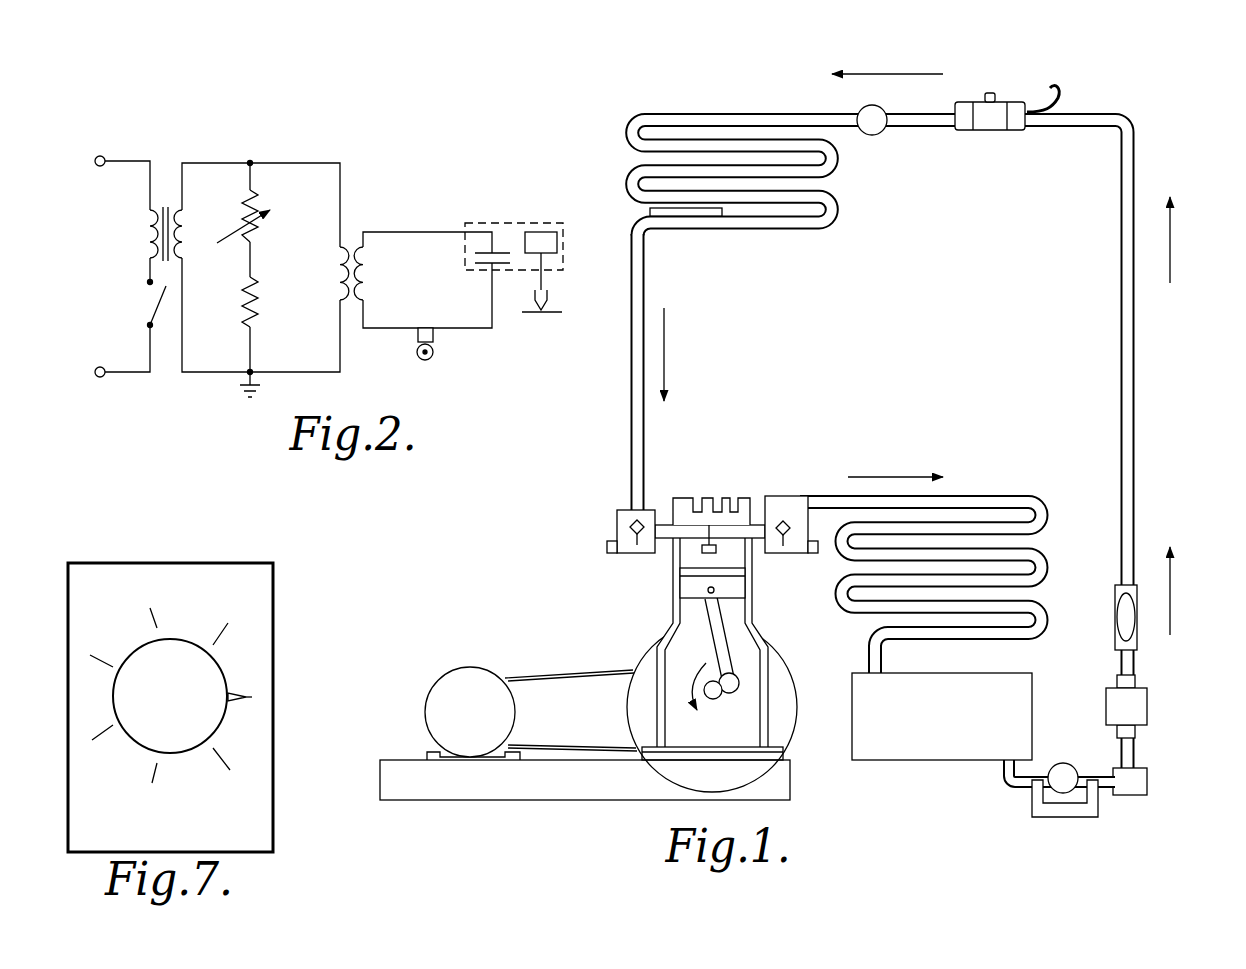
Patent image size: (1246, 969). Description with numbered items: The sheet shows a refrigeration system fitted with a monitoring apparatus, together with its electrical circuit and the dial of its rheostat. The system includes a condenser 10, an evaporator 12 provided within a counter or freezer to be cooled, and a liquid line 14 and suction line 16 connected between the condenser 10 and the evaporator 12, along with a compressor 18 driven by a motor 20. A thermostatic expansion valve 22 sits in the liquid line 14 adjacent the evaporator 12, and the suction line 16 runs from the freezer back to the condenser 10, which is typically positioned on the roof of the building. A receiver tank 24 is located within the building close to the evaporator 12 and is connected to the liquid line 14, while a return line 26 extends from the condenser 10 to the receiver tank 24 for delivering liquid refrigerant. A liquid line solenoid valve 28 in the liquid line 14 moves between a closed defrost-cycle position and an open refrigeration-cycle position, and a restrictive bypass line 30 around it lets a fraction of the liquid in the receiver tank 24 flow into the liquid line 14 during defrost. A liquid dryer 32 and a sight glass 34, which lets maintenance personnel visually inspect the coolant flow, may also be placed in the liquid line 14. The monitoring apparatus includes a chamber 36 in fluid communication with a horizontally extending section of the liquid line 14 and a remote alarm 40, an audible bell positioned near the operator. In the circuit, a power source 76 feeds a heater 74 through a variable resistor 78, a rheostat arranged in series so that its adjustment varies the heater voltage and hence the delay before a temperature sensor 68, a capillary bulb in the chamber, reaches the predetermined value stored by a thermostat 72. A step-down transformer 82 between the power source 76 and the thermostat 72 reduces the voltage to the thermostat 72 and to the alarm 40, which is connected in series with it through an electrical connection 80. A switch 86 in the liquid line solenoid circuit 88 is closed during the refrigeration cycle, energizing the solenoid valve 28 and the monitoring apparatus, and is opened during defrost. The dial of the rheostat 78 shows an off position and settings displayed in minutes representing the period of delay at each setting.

In FIG. 1, the condenser 10 is at (1022, 496).
In FIG. 1, the evaporator 12 is at (740, 236).
In FIG. 1, the liquid line 14 is at (1125, 423).
In FIG. 1, the suction line 16 is at (637, 433).
In FIG. 1, the compressor 18 is at (670, 622).
In FIG. 1, the motor 20 is at (466, 682).
In FIG. 1, the thermostatic expansion valve 22 is at (876, 124).
In FIG. 1, the receiver tank 24 is at (955, 762).
In FIG. 1, the return line 26 is at (868, 657).
In FIG. 1, the liquid line solenoid valve 28 is at (1062, 772).
In FIG. 2, the liquid line solenoid valve 28 is at (136, 242).
In FIG. 1, the restrictive bypass line 30 is at (1065, 810).
In FIG. 1, the liquid dryer 32 is at (1143, 707).
In FIG. 1, the sight glass 34 is at (1122, 620).
In FIG. 1, the chamber 36 is at (983, 122).
In FIG. 2, the remote alarm 40 is at (444, 368).
In FIG. 2, the temperature sensor 68 is at (541, 325).
In FIG. 2, the thermostat 72 is at (536, 226).
In FIG. 2, the heater 74 is at (276, 290).
In FIG. 2, the power source 76 is at (102, 155).
In FIG. 2, the variable resistor 78 is at (230, 192).
In FIG. 7, the variable resistor 78 is at (284, 601).
In FIG. 2, the electrical connection 80 is at (477, 326).
In FIG. 2, the step-down transformer 82 is at (357, 220).
In FIG. 2, the switch 86 is at (141, 302).
In FIG. 2, the liquid line solenoid circuit 88 is at (135, 373).